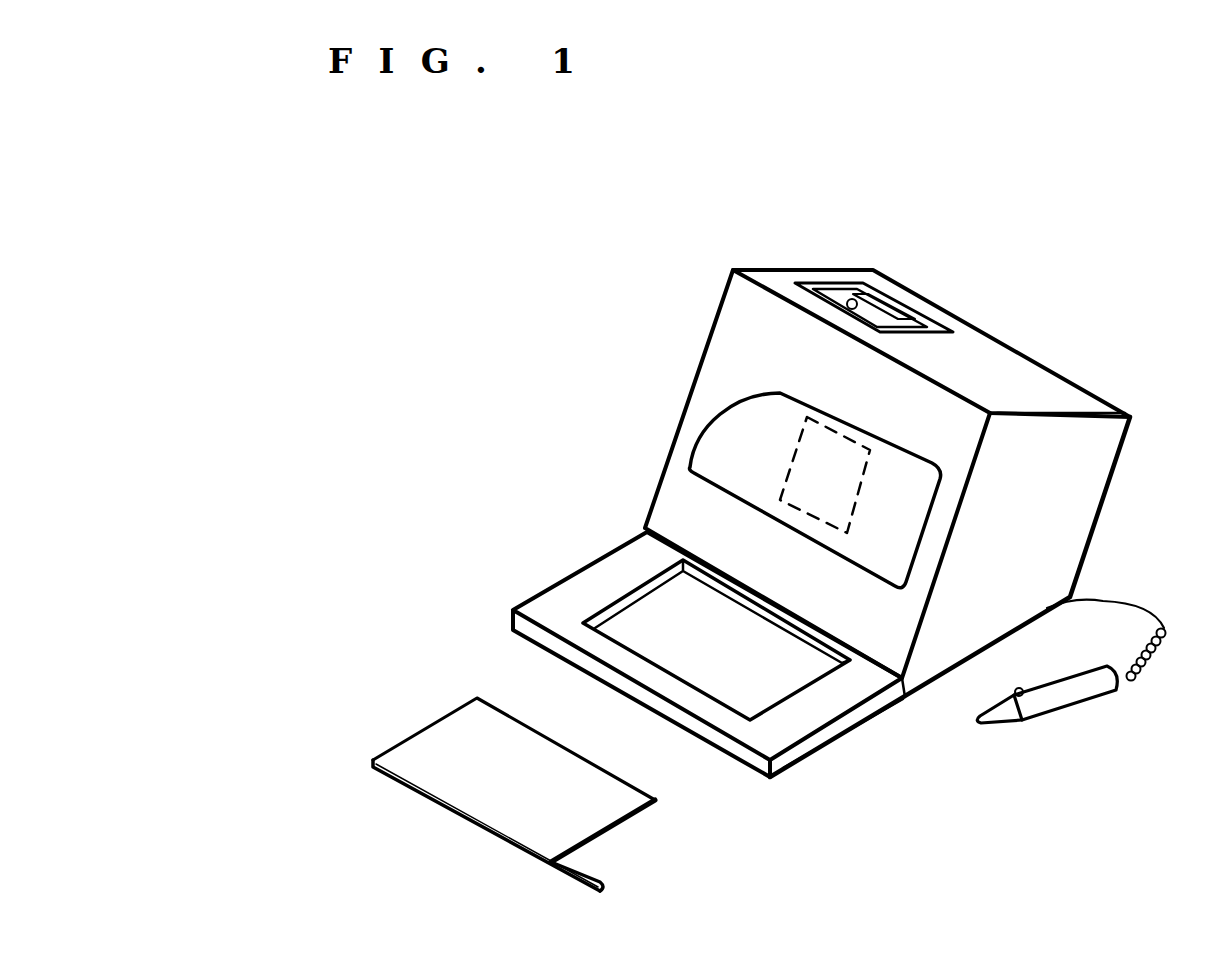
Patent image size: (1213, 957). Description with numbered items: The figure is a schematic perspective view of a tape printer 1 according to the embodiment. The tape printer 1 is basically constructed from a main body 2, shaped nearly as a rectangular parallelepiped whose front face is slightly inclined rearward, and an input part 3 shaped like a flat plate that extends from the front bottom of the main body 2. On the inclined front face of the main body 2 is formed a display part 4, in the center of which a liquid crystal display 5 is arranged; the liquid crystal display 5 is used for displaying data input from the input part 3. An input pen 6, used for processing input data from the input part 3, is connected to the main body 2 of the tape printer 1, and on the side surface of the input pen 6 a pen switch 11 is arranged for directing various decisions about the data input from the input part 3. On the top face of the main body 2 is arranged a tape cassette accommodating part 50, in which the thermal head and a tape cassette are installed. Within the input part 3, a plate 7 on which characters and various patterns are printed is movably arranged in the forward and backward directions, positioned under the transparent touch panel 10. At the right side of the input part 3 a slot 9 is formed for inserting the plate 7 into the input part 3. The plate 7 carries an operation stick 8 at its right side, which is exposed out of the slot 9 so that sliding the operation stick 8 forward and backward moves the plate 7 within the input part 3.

The tape printer 1 is at (1032, 243).
The main body 2 is at (733, 347).
The input part 3 is at (623, 567).
The display part 4 is at (720, 447).
The liquid crystal display 5 is at (853, 470).
The input pen 6 is at (1082, 690).
The plate 7 is at (465, 747).
The operation stick 8 is at (600, 873).
The slot 9 is at (877, 717).
The transparent touch panel 10 is at (642, 622).
The pen switch 11 is at (1023, 690).
The tape cassette accommodating part 50 is at (883, 300).